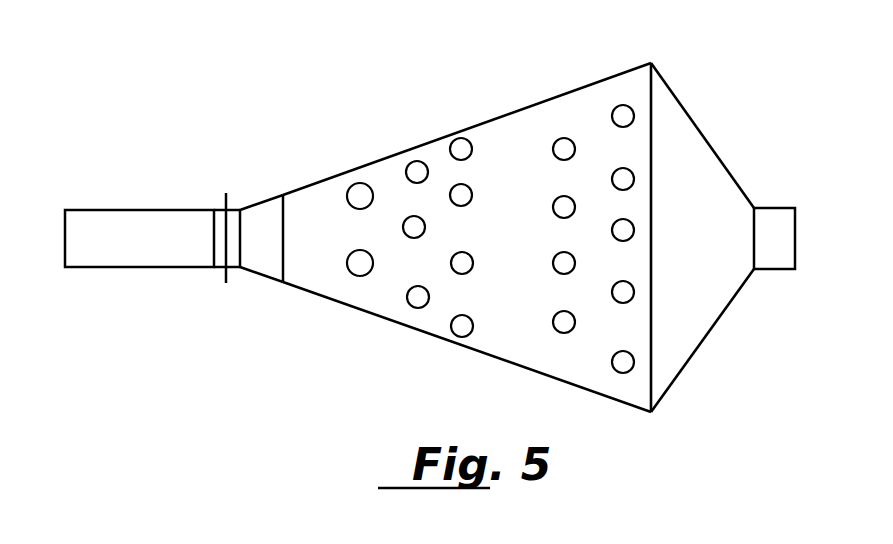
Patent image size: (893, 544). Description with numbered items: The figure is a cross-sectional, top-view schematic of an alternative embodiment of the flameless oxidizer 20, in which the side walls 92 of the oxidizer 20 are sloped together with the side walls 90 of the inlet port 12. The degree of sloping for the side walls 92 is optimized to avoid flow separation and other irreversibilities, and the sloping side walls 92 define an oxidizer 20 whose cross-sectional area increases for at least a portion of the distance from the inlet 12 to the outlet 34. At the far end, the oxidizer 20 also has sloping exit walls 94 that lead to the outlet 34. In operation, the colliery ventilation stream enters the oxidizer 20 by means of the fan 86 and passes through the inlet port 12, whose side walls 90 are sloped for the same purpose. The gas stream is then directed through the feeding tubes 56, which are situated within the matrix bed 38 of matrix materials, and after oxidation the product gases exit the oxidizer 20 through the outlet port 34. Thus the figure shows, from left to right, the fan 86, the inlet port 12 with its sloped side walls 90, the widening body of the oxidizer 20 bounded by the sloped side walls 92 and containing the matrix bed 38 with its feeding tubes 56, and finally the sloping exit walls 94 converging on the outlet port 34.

The oxidizer 20 is at (408, 110).
The inlet port 12 is at (268, 213).
The fan 86 is at (126, 215).
The side walls of the inlet port 90 is at (262, 276).
The side walls 92 is at (541, 102).
The exit walls 94 is at (707, 135).
The outlet port 34 is at (782, 208).
The matrix bed 38 is at (527, 223).
The feeding tubes 56 is at (560, 264).